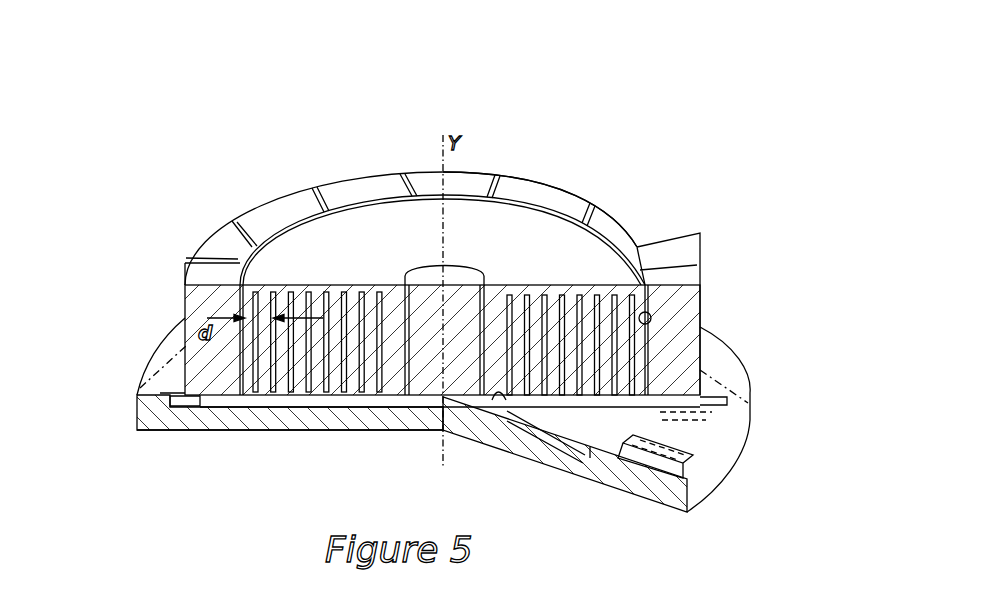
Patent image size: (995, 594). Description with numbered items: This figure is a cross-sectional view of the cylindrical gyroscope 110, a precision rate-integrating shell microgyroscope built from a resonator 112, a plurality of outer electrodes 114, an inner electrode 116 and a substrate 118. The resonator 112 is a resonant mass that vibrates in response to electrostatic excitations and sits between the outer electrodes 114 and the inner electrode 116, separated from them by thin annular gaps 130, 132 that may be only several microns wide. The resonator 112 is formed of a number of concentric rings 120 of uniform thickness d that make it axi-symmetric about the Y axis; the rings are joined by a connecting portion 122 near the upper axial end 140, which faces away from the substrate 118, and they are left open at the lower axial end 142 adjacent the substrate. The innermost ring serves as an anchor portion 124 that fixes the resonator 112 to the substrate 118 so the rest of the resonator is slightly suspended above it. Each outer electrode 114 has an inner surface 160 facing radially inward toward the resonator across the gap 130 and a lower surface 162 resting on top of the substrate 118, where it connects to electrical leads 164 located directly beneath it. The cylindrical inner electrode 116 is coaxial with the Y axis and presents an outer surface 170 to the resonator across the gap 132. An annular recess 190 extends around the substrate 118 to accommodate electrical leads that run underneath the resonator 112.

The gyroscope 110 is at (320, 135).
The resonator 112 is at (538, 228).
The outer electrodes 114 is at (660, 240).
The inner electrode 116 is at (432, 312).
The substrate 118 is at (728, 463).
The concentric rings 120 is at (546, 502).
The connecting portion 122 is at (262, 290).
The anchor portion 124 is at (491, 400).
The annular gap 130 is at (620, 220).
The annular gap 132 is at (481, 283).
The upper axial end 140 is at (250, 180).
The lower axial end 142 is at (246, 458).
The inner surface 160 is at (651, 313).
The lower surface 162 is at (196, 404).
The leads 164 is at (682, 445).
The outer surface 170 is at (400, 325).
The annular recess 190 is at (592, 457).